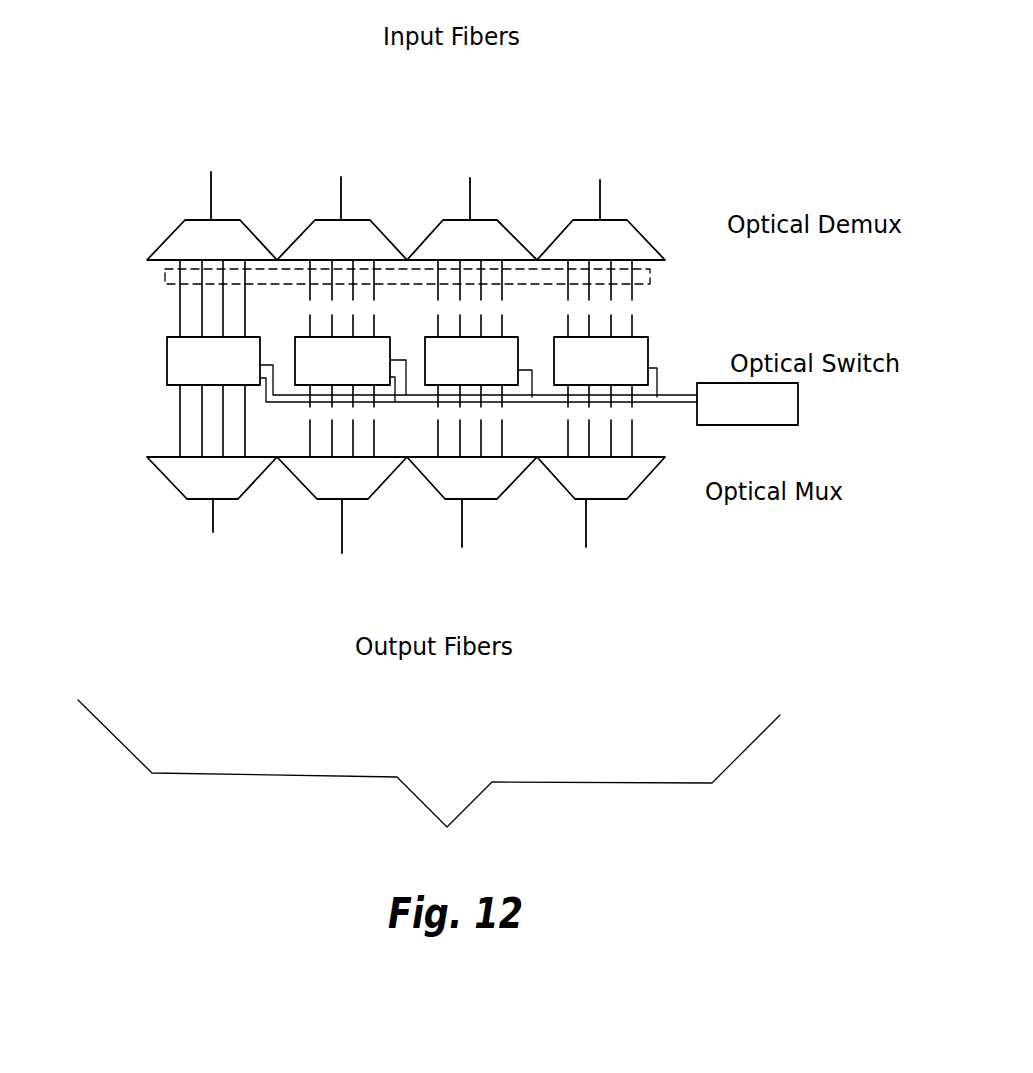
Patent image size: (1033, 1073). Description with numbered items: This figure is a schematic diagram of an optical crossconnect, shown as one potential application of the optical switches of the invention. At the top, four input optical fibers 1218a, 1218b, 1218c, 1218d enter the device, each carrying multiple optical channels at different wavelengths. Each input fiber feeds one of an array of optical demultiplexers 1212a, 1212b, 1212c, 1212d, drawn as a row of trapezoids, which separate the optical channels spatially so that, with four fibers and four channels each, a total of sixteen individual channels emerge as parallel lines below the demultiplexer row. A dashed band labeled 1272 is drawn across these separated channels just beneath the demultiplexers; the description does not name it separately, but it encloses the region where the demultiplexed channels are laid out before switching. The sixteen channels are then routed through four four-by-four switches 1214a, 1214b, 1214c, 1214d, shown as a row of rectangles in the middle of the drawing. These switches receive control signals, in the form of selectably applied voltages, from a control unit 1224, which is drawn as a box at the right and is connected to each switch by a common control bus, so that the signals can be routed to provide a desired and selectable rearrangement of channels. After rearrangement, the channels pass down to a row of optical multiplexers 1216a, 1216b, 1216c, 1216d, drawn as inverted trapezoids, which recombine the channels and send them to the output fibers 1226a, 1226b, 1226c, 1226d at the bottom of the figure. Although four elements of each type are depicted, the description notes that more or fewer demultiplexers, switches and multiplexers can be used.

The input optical fiber 1218a is at (216, 185).
The input optical fiber 1218b is at (346, 188).
The input optical fiber 1218c is at (475, 184).
The input optical fiber 1218d is at (603, 184).
The optical demultiplexer 1212a is at (232, 219).
The optical demultiplexer 1212b is at (383, 233).
The optical demultiplexer 1212c is at (498, 219).
The optical demultiplexer 1212d is at (634, 227).
The wavelength channel region 1272 is at (650, 286).
The 4×4 switch 1214a is at (166, 348).
The 4×4 switch 1214b is at (293, 352).
The 4×4 switch 1214c is at (424, 353).
The 4×4 switch 1214d is at (553, 348).
The control unit 1224 is at (783, 425).
The optical multiplexer 1216a is at (175, 487).
The optical multiplexer 1216b is at (303, 488).
The optical multiplexer 1216c is at (428, 487).
The optical multiplexer 1216d is at (557, 490).
The output fiber 1226a is at (213, 533).
The output fiber 1226b is at (342, 540).
The output fiber 1226c is at (462, 537).
The output fiber 1226d is at (590, 540).